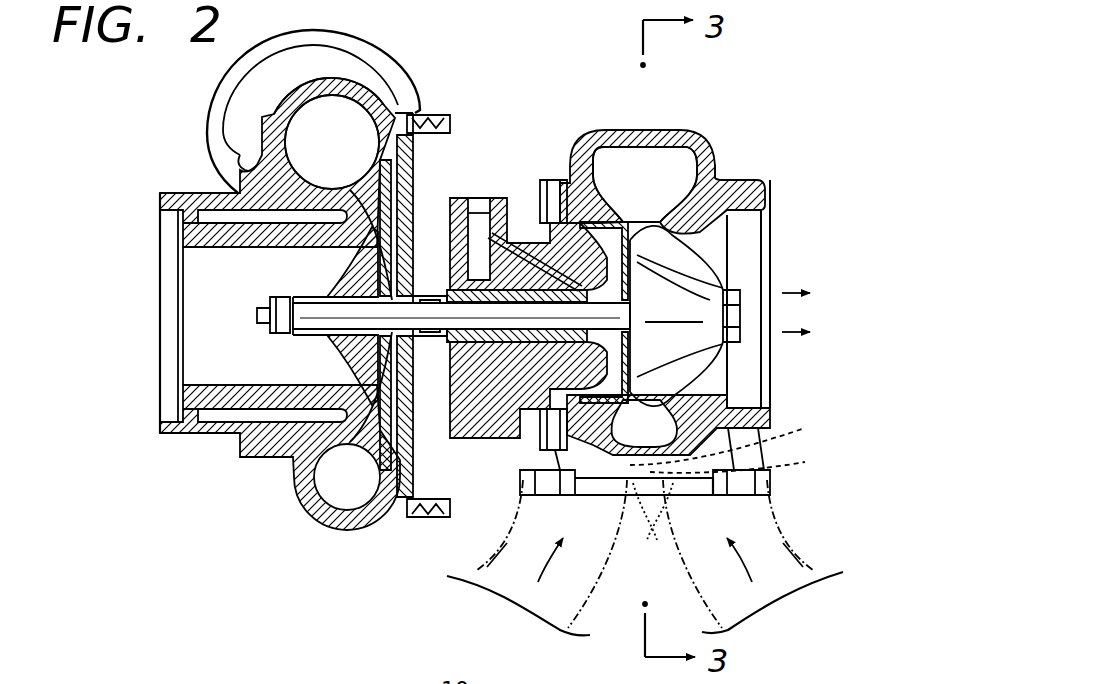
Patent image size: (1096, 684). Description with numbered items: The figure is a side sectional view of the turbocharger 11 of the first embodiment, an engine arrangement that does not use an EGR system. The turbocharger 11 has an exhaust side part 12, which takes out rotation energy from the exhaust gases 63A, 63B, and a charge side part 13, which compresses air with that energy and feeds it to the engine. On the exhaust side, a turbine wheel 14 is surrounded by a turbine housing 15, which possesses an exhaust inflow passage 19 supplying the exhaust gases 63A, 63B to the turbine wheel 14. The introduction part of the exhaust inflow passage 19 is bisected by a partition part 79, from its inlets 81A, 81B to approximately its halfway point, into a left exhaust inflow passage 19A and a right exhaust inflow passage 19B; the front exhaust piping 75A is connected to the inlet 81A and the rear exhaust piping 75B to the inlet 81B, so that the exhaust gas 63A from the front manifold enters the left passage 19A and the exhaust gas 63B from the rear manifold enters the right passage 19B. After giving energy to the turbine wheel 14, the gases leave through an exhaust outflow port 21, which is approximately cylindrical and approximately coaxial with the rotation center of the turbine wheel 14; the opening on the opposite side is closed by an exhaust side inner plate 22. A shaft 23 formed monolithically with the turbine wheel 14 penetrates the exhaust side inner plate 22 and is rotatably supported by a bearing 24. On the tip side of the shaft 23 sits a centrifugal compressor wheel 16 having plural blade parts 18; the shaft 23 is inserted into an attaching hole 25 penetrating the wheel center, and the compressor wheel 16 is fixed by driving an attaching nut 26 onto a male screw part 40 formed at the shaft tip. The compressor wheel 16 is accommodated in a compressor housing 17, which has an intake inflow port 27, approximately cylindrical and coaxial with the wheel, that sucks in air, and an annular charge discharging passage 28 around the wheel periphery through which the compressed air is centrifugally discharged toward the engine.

The turbocharger 11 is at (788, 72).
The exhaust side part 12 is at (676, 120).
The charge side part 13 is at (198, 88).
The turbine wheel 14 is at (720, 284).
The turbine housing 15 is at (720, 152).
The compressor wheel 16 is at (285, 297).
The compressor housing 17 is at (358, 90).
The blade parts 18 is at (340, 267).
The exhaust inflow passage 19 is at (617, 155).
The left exhaust inflow passage 19A is at (741, 440).
The right exhaust inflow passage 19B is at (751, 467).
The exhaust outflow port 21 is at (737, 243).
The exhaust side inner plate 22 is at (637, 378).
The shaft 23 is at (517, 316).
The bearing 24 is at (475, 340).
The attaching hole 25 is at (363, 232).
The attaching nut 26 is at (268, 306).
The intake inflow port 27 is at (178, 247).
The charge discharging passage 28 is at (398, 98).
The male screw part 40 is at (262, 322).
The exhaust gas 63A is at (790, 330).
The exhaust gas 63B is at (743, 563).
The front exhaust piping 75A is at (493, 568).
The rear exhaust piping 75B is at (797, 568).
The partition part 79 is at (645, 554).
The inlet 81A is at (587, 501).
The inlet 81B is at (703, 501).